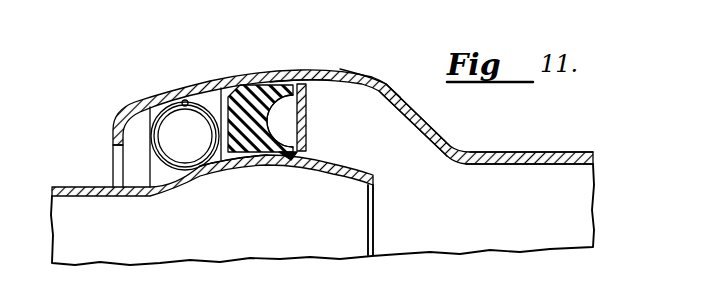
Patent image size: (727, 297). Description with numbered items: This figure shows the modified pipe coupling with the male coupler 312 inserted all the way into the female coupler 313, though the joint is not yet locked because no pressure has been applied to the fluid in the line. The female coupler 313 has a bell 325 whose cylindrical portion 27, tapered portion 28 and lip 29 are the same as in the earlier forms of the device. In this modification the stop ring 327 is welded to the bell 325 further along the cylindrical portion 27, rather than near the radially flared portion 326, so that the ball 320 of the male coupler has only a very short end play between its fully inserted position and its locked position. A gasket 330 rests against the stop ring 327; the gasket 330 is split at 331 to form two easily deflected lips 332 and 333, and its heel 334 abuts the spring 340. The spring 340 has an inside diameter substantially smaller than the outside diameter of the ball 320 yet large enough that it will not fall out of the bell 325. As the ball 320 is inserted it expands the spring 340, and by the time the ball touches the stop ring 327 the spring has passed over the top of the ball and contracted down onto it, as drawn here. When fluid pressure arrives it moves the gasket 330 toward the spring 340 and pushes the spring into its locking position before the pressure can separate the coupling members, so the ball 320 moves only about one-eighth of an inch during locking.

The cylindrical portion 27 is at (263, 74).
The tapered portion 28 is at (172, 97).
The lip 29 is at (113, 130).
The coupler 312 is at (80, 187).
The female coupler 313 is at (566, 152).
The ball 320 is at (240, 164).
The bell 325 is at (385, 80).
The radially flared portion 326 is at (425, 118).
The stop ring 327 is at (307, 132).
The gasket 330 is at (245, 97).
The split 331 is at (263, 120).
The lip 332 is at (297, 79).
The lip 333 is at (281, 162).
The heel 334 is at (214, 108).
The spring 340 is at (147, 117).